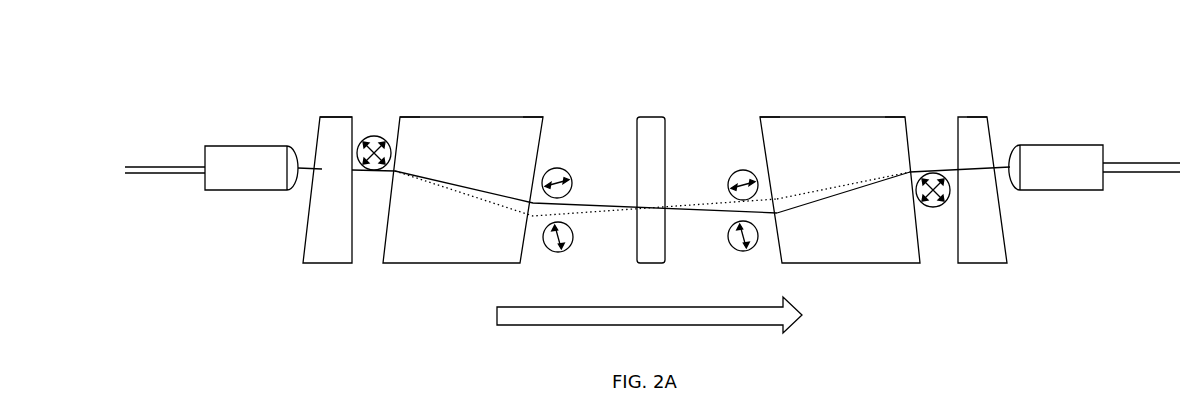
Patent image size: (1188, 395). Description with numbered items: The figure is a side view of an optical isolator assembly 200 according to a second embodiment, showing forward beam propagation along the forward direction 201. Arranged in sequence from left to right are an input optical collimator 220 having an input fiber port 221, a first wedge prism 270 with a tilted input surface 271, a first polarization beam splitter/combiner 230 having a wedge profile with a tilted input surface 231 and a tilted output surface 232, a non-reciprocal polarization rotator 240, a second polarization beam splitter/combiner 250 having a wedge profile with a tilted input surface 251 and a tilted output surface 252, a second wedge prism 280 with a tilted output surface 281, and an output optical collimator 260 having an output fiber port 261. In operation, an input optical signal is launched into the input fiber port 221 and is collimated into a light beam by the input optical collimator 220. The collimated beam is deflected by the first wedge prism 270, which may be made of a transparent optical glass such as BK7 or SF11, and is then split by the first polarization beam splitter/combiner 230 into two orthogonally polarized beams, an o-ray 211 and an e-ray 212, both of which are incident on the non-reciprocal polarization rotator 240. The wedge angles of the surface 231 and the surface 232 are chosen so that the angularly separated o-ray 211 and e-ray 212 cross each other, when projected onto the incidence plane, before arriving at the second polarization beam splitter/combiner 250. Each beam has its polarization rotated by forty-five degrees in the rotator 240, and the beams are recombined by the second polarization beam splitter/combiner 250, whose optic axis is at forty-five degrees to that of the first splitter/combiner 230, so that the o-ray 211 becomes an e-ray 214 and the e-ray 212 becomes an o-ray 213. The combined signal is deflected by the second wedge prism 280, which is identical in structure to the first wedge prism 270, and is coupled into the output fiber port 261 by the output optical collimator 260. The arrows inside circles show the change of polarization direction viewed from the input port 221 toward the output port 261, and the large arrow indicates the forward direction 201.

The optical isolator assembly 200 is at (1013, 58).
The forward direction 201 is at (557, 328).
The o-ray 211 is at (474, 183).
The e-ray 212 is at (467, 204).
The o-ray 213 is at (828, 185).
The e-ray 214 is at (829, 216).
The input optical collimator 220 is at (245, 178).
The input fiber port 221 is at (191, 160).
The first polarization beam splitter/combiner 230 is at (458, 242).
The tilted input surface 231 is at (391, 130).
The tilted output surface 232 is at (551, 130).
The non-reciprocal polarization rotator 240 is at (651, 249).
The second polarization beam splitter/combiner 250 is at (858, 245).
The tilted input surface 251 is at (754, 131).
The tilted output surface 252 is at (909, 130).
The output optical collimator 260 is at (1074, 179).
The output fiber port 261 is at (1156, 157).
The first wedge prism 270 is at (331, 245).
The tilted input surface 271 is at (319, 131).
The second wedge prism 280 is at (981, 245).
The tilted output surface 281 is at (996, 130).